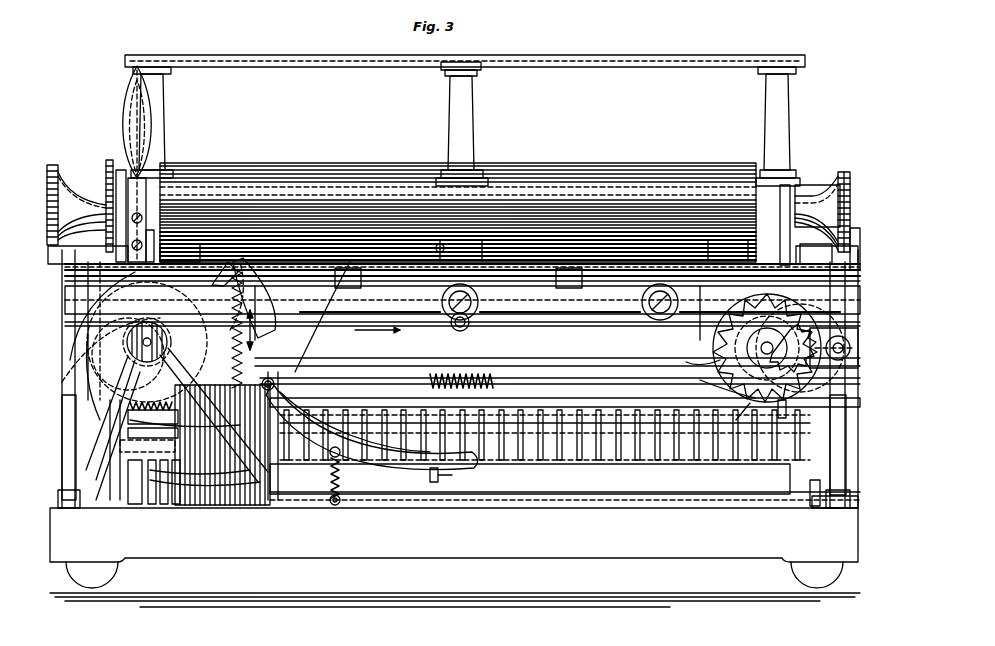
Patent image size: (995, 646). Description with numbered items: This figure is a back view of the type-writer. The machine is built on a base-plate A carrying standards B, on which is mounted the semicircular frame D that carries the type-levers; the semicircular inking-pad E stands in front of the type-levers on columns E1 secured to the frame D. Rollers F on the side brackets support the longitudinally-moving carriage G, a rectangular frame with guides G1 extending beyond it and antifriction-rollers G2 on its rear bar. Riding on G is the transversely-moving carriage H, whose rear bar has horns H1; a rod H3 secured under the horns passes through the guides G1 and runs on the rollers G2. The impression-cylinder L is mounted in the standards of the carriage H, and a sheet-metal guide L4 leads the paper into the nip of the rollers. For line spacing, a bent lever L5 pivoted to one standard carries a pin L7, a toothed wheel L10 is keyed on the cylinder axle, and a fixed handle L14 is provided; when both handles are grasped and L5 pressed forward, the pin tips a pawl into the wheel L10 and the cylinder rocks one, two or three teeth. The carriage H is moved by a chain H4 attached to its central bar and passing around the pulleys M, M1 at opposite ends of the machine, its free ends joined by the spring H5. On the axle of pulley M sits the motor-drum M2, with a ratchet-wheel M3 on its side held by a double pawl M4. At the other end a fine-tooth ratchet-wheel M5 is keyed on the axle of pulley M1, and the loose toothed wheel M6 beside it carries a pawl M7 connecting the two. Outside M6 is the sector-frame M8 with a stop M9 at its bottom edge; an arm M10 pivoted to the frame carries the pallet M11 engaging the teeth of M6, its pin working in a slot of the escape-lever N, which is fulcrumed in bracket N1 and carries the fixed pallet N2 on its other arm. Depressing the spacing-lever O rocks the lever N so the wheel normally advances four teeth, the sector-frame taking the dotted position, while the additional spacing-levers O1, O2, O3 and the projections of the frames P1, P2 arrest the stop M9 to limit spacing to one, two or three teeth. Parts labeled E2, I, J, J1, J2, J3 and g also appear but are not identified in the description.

The base-plate A is at (440, 537).
The standards B is at (62, 440).
The semicircular frame D is at (253, 298).
The semicircular inking-pad E is at (300, 68).
The columns E1 is at (462, 124).
The end post E2 is at (162, 130).
The rollers F is at (460, 330).
The longitudinally-moving carriage G is at (330, 314).
The guides G1 is at (458, 275).
The antifriction-rollers G2 is at (652, 316).
The transversely-moving carriage H is at (377, 338).
The horns H1 is at (440, 262).
The rod H3 is at (496, 251).
The band or chain H4 is at (557, 341).
The spring H5 is at (560, 383).
The type bar comb I is at (545, 435).
The shaft J is at (745, 330).
The comb bar J1 is at (565, 393).
The lower frame bar J2 is at (806, 470).
The frame bracket J3 is at (812, 488).
The impression-cylinder L is at (332, 164).
The sheet-metal guide L4 is at (468, 225).
The bent lever L5 is at (126, 84).
The pin L7 is at (104, 184).
The toothed wheel L10 is at (106, 170).
The fixed handle L14 is at (130, 120).
The pulley M is at (710, 385).
The pulley M1 is at (177, 400).
The motor-drum M2 is at (686, 353).
The ratchet-wheel M3 is at (722, 384).
The double pawl M4 is at (800, 335).
The fine-tooth ratchet-wheel M5 is at (88, 370).
The toothed wheel M6 is at (258, 345).
The pawl M7 is at (147, 339).
The sector-frame M8 is at (110, 470).
The stop M9 is at (127, 494).
The arm M10 is at (151, 430).
The pallet M11 is at (200, 445).
The escape-lever N is at (402, 474).
The bracket N1 is at (317, 381).
The fixed pallet N2 is at (225, 274).
The spacing-lever O is at (397, 476).
The spacing-lever O1 is at (150, 500).
The spacing-lever O2 is at (164, 504).
The spacing-lever O3 is at (178, 504).
The rectangular frame P1 is at (205, 484).
The rectangular frame P2 is at (200, 480).
The gear g is at (456, 348).